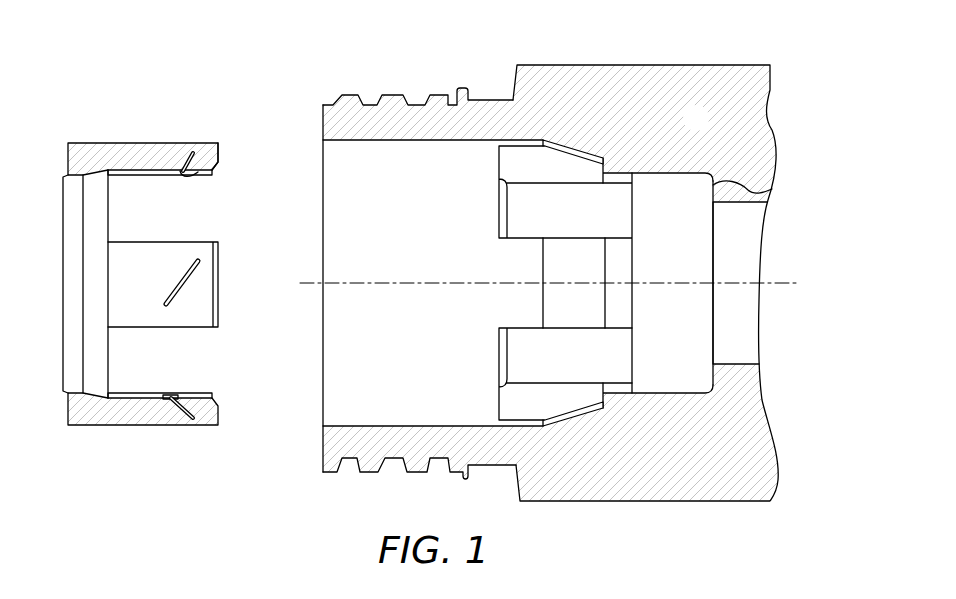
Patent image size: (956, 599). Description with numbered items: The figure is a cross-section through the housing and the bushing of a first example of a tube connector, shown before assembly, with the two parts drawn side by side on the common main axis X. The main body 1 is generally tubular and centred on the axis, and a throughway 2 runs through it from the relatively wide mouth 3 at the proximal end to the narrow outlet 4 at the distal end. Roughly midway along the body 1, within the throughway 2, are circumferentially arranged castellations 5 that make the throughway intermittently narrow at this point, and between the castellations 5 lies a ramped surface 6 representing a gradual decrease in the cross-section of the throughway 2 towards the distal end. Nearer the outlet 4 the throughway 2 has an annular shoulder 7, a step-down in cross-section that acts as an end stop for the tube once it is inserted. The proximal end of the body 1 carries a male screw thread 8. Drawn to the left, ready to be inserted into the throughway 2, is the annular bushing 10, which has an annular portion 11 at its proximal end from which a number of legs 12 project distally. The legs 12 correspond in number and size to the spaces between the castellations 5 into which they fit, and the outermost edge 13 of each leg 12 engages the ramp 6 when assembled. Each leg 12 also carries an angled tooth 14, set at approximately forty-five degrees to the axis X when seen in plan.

The main body 1 is at (703, 128).
The throughway 2 is at (410, 264).
The mouth 3 is at (323, 193).
The outlet 4 is at (752, 236).
The castellations 5 is at (551, 218).
The ramped surface 6 is at (580, 152).
The annular shoulder 7 is at (772, 189).
The male screw thread 8 is at (395, 95).
The annular bushing 10 is at (163, 296).
The annular portion 11 is at (104, 358).
The legs 12 is at (142, 143).
The outermost edge 13 is at (216, 143).
The angled tooth 14 is at (187, 176).